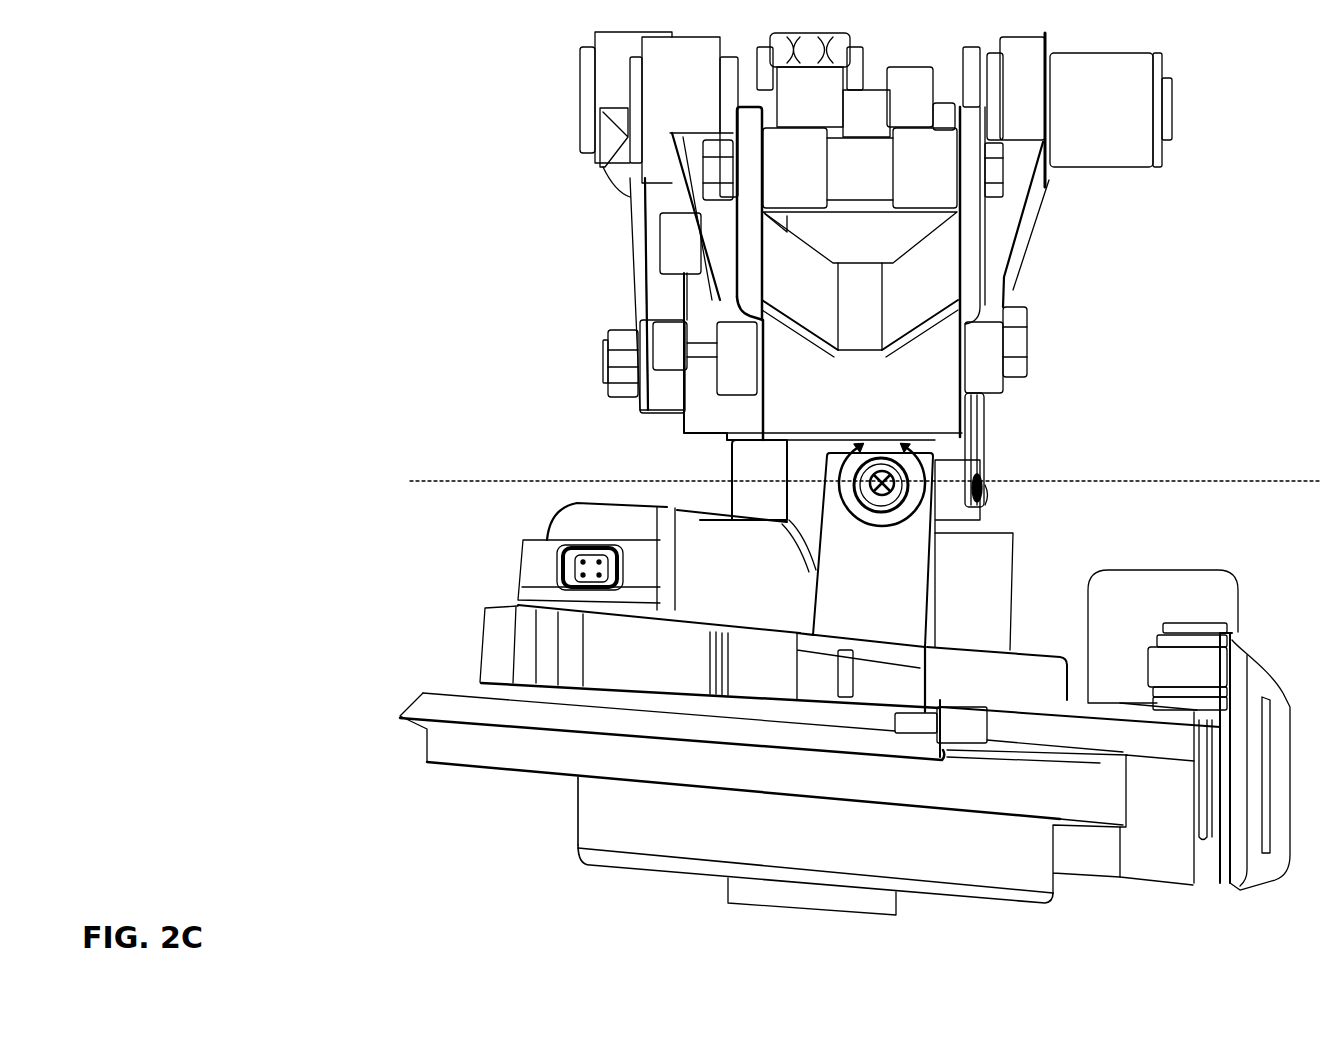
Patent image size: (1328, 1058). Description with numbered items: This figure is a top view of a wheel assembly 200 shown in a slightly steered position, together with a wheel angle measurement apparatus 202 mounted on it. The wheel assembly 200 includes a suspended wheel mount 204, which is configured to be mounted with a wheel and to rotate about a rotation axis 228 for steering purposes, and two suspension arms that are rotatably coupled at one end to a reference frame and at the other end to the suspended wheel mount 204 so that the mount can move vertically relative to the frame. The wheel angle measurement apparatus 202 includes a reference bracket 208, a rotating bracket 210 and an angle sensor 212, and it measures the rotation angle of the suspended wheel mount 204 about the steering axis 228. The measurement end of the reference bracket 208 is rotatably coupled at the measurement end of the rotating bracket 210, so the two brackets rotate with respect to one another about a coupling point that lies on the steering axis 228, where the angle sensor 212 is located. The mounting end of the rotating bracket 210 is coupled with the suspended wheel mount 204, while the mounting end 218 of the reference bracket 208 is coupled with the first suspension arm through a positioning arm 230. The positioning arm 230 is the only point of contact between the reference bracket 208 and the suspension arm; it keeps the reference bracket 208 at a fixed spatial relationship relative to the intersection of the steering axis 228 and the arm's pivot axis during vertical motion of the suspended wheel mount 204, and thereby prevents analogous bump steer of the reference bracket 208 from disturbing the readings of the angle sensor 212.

The wheel assembly 200 is at (302, 427).
The wheel angle measurement apparatus 202 is at (997, 493).
The suspended wheel mount 204 is at (607, 805).
The reference bracket 208 is at (950, 492).
The rotating bracket 210 is at (893, 595).
The angle sensor 212 is at (826, 478).
The mounting end 218 is at (983, 473).
The rotation axis 228 is at (882, 468).
The positioning arm 230 is at (983, 442).